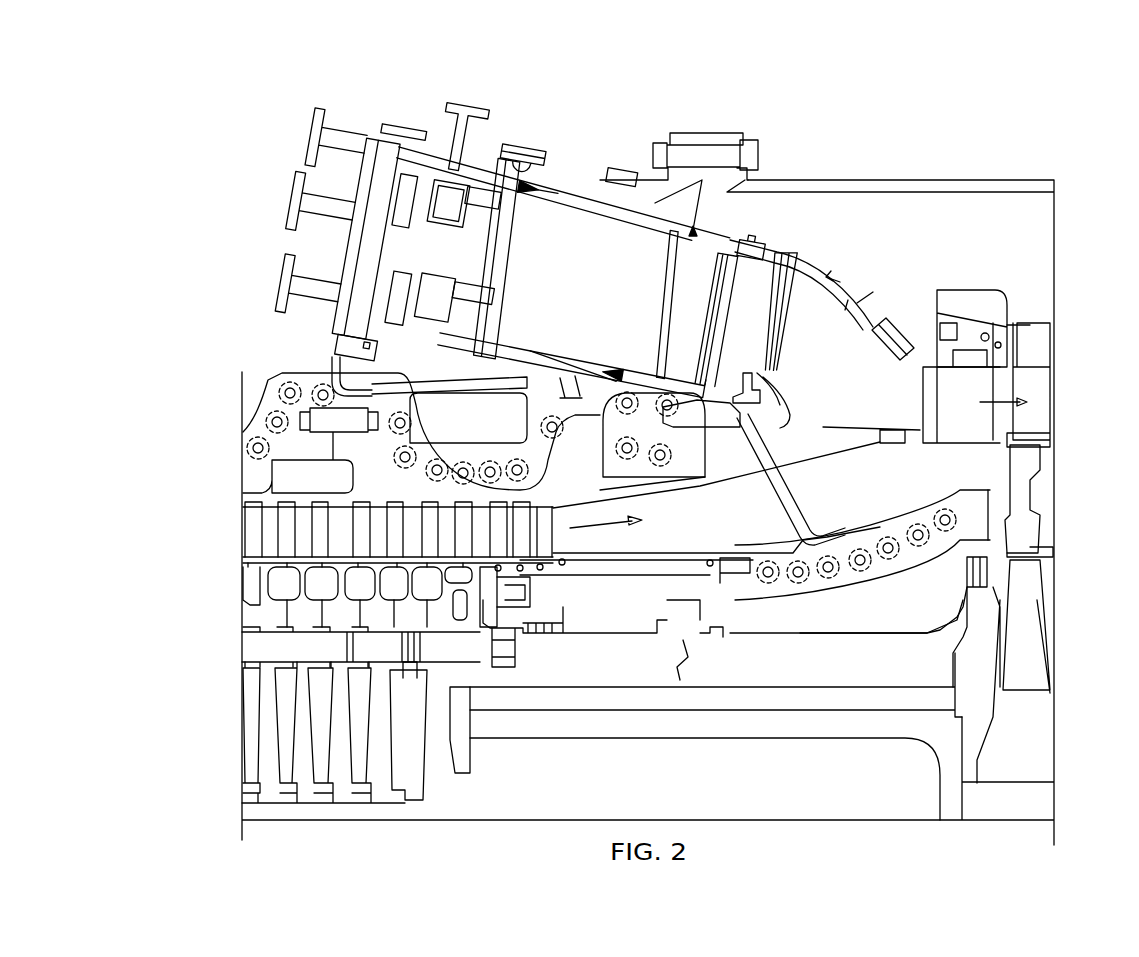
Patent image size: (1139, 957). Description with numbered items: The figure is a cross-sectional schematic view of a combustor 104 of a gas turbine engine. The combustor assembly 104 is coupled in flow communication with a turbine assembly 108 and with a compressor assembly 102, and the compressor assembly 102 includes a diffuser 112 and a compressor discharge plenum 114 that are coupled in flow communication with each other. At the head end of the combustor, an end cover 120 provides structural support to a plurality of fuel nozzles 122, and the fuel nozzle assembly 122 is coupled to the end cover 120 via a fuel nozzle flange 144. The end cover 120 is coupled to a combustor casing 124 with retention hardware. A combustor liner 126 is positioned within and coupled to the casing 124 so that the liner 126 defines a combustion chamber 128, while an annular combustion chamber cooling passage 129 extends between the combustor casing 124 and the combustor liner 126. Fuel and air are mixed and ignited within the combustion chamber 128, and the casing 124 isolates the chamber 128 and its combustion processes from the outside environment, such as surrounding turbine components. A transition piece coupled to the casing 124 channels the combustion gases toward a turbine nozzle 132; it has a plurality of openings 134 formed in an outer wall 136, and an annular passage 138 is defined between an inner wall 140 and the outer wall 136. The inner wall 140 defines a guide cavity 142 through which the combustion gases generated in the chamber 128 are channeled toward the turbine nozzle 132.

The compressor assembly 102 is at (243, 610).
The combustor 104 is at (272, 78).
The turbine assembly 108 is at (1047, 688).
The diffuser 112 is at (712, 544).
The compressor discharge plenum 114 is at (780, 231).
The end cover 120 is at (363, 213).
The fuel nozzles 122 is at (478, 185).
The combustor casing 124 is at (589, 197).
The combustor liner 126 is at (587, 207).
The combustion chamber 128 is at (757, 318).
The annular combustion chamber cooling passage 129 is at (651, 213).
The turbine nozzle 132 is at (927, 420).
The openings 134 is at (872, 310).
The outer wall 136 is at (814, 265).
The annular passage 138 is at (852, 290).
The inner wall 140 is at (917, 388).
The guide cavity 142 is at (824, 364).
The fuel nozzle flange 144 is at (398, 186).